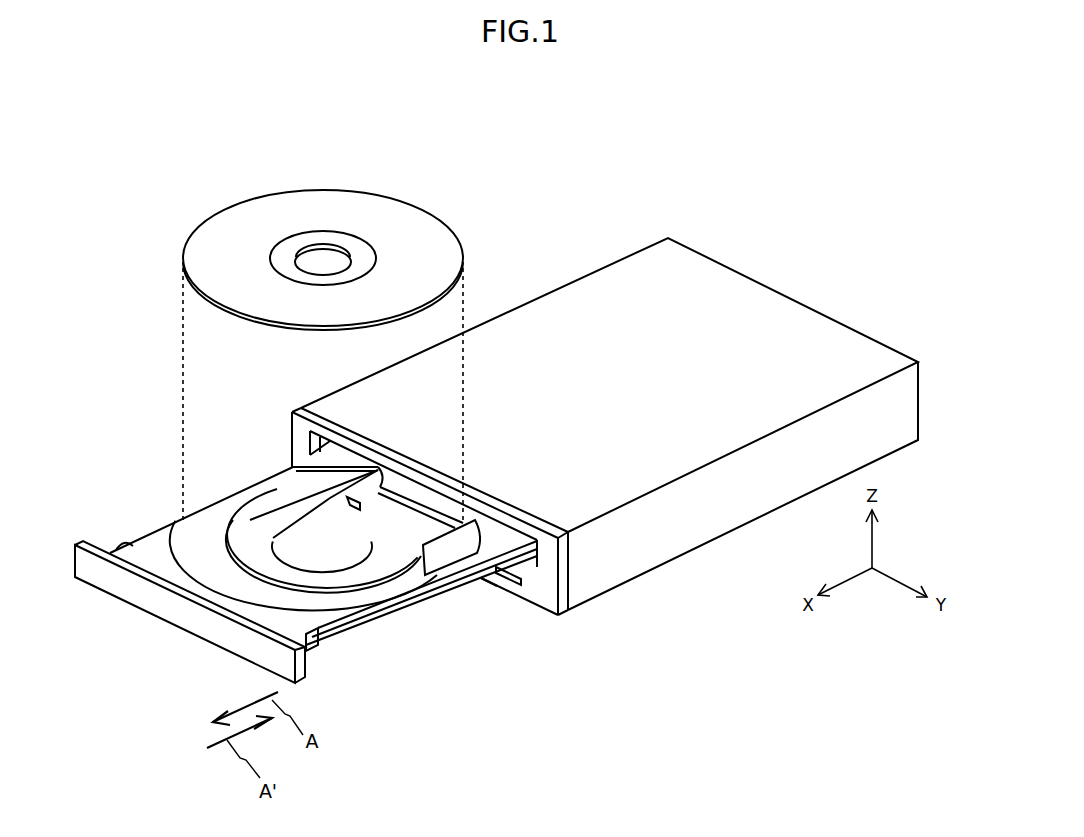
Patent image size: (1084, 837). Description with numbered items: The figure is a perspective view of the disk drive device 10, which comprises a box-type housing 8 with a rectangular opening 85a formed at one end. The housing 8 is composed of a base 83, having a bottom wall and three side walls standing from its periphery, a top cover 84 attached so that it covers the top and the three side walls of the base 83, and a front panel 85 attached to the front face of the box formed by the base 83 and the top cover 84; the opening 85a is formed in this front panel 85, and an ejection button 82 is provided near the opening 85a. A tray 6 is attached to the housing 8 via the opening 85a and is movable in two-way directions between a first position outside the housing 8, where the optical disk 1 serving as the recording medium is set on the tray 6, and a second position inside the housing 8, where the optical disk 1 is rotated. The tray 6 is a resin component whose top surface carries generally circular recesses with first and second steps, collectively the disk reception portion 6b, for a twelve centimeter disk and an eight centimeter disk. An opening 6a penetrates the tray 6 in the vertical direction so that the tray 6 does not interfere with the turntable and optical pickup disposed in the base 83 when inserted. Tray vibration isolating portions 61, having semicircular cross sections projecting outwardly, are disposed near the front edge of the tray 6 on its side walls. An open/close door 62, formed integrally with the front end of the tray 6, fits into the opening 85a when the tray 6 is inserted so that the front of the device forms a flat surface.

The optical disk 1 is at (323, 329).
The disk drive device 10 is at (605, 410).
The tray 6 is at (306, 563).
The opening 6a is at (365, 571).
The disk reception portion 6b is at (303, 518).
The tray vibration isolating portion 61 is at (233, 580).
The open/close door 62 is at (190, 618).
The housing 8 is at (610, 658).
The ejection button 82 is at (490, 646).
The base 83 is at (743, 511).
The top cover 84 is at (609, 448).
The front panel 85 is at (469, 534).
The opening 85a is at (528, 616).